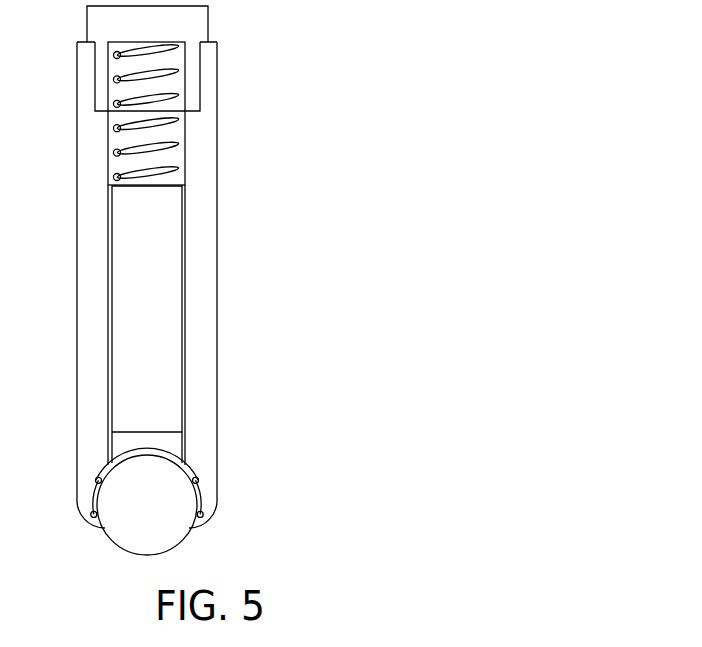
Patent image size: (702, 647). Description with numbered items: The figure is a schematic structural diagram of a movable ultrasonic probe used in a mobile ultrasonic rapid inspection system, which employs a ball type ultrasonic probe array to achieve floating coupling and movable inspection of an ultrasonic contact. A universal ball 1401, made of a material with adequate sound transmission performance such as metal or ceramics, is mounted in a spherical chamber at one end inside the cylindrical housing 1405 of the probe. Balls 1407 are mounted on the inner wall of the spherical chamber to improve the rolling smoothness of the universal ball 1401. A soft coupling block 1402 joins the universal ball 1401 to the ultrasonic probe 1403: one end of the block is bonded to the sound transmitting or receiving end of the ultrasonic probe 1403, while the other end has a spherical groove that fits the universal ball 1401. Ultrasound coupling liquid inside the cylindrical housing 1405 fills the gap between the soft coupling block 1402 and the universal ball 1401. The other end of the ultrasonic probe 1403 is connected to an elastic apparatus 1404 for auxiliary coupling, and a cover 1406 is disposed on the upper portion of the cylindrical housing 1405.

The universal ball 1401 is at (145, 543).
The soft coupling block 1402 is at (160, 446).
The ultrasonic probe 1403 is at (147, 230).
The elastic apparatus 1404 is at (155, 123).
The cylindrical housing 1405 is at (198, 300).
The cover 1406 is at (158, 24).
The balls 1407 is at (193, 481).